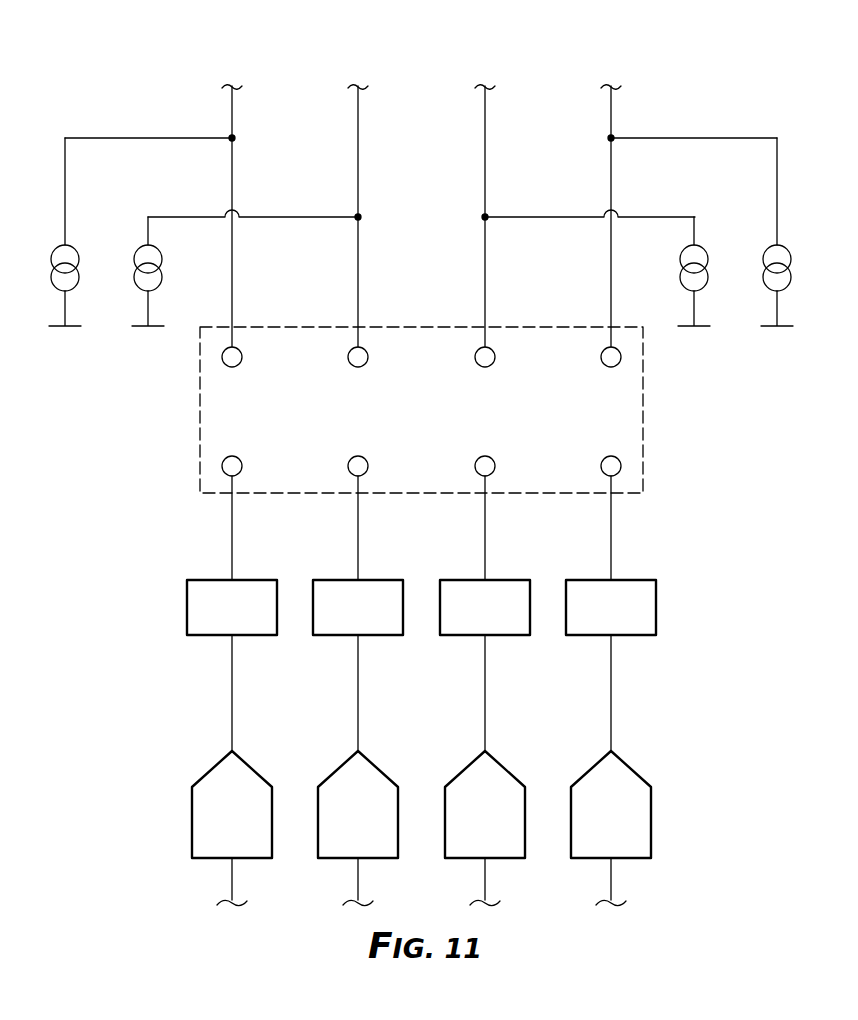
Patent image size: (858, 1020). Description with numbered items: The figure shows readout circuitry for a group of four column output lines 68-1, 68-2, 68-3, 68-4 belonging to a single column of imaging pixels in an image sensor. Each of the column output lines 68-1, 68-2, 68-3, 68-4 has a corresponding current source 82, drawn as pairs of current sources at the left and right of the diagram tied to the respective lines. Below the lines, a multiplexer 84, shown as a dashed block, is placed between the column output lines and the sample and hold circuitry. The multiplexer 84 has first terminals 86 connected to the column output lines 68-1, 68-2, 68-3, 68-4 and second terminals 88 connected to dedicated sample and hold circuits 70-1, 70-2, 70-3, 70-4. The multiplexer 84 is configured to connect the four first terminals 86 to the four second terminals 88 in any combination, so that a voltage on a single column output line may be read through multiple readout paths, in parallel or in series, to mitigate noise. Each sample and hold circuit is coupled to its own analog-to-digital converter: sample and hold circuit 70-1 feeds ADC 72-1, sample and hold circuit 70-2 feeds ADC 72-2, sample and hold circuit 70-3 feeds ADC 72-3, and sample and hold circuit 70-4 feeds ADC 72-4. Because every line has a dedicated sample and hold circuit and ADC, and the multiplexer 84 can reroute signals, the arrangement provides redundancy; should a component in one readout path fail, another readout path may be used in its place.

The column output line 68-1 is at (232, 100).
The column output line 68-2 is at (358, 100).
The column output line 68-3 is at (485, 100).
The column output line 68-4 is at (611, 100).
The sample and hold circuit 70-1 is at (248, 580).
The sample and hold circuit 70-2 is at (374, 580).
The sample and hold circuit 70-3 is at (512, 580).
The sample and hold circuit 70-4 is at (656, 620).
The analog-to-digital converter 72-1 is at (193, 798).
The analog-to-digital converter 72-2 is at (348, 768).
The analog-to-digital converter 72-3 is at (495, 762).
The analog-to-digital converter 72-4 is at (632, 768).
The current source 82 is at (94, 290).
The multiplexer 84 is at (643, 422).
The first terminal 86 is at (488, 366).
The second terminal 88 is at (238, 458).